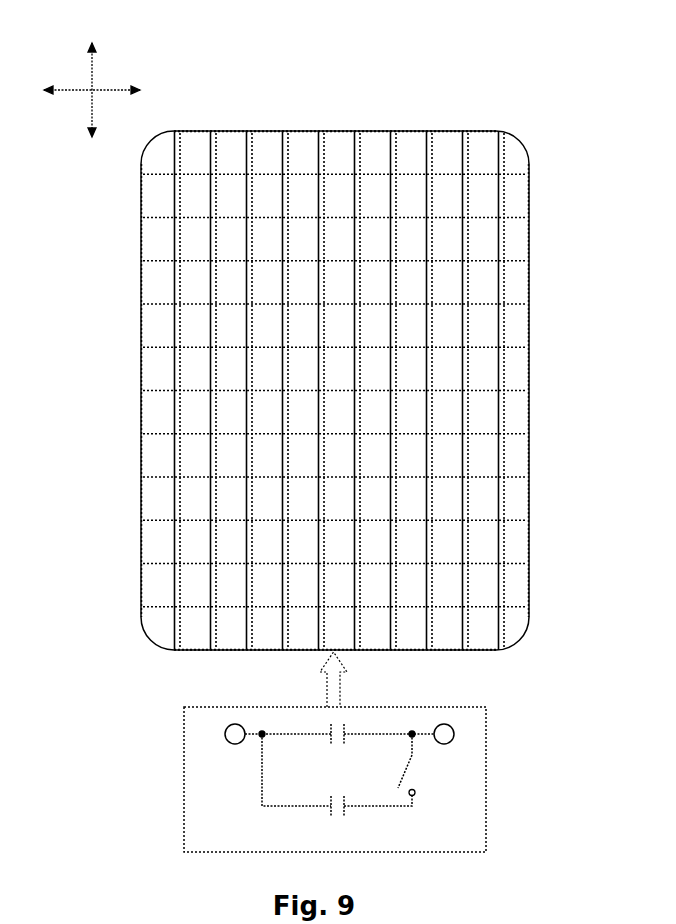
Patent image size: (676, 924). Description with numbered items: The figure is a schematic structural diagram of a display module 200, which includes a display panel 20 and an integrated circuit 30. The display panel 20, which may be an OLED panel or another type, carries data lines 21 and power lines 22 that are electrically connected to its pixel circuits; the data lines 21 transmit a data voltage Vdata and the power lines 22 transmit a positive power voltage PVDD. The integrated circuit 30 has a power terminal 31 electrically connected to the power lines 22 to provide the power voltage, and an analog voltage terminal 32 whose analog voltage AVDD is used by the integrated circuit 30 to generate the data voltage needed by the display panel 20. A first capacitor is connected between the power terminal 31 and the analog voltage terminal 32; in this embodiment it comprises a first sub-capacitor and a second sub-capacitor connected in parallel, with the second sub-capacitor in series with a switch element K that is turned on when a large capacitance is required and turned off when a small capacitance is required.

The display panel 20 is at (357, 383).
The data lines 21 is at (318, 146).
The power lines 22 is at (378, 172).
The integrated circuit 30 is at (376, 763).
The power terminal 31 is at (238, 724).
The analog voltage terminal 32 is at (440, 724).
The display module 200 is at (308, 444).